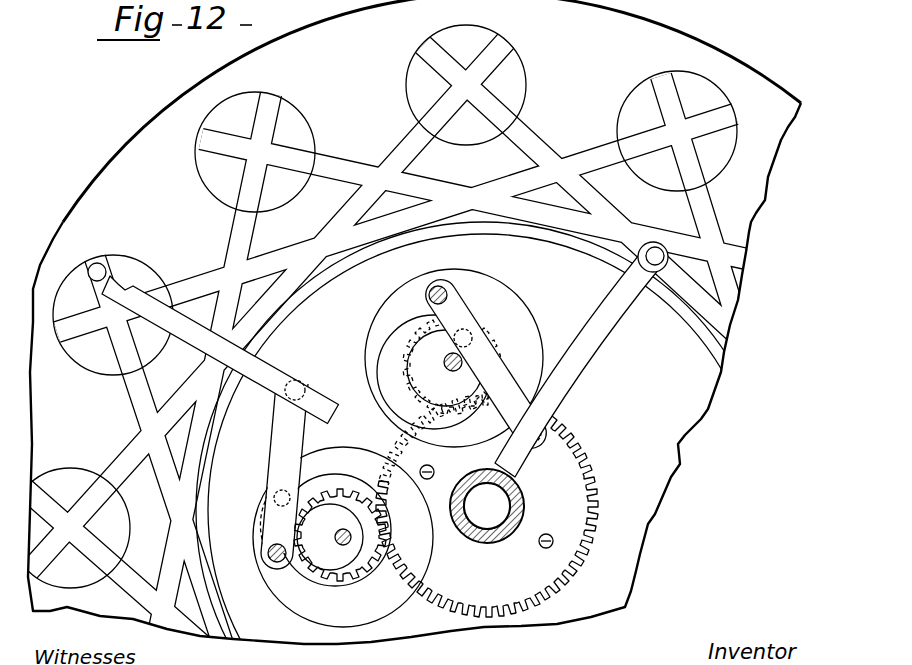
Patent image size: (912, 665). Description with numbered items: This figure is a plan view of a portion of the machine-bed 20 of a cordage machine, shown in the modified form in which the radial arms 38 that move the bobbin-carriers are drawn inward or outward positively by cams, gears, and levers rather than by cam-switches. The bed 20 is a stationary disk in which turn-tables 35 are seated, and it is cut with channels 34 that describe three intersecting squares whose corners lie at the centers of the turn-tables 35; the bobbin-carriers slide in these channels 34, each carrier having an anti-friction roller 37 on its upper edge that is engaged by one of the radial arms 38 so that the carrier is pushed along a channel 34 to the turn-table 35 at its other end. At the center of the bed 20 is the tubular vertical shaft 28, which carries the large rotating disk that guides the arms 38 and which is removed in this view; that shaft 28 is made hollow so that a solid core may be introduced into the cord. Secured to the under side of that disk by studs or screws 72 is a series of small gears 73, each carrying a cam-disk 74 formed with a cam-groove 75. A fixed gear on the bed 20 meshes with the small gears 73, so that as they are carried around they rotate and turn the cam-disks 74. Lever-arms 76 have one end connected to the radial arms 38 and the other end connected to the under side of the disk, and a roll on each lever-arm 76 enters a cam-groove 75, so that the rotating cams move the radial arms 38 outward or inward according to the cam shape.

The bed 20 is at (484, 361).
The hollow vertical shaft 28 is at (514, 503).
The channels 34 is at (468, 353).
The turn-tables 35 is at (373, 306).
The anti-friction roller 37 is at (97, 263).
The radial arms 38 is at (385, 359).
The studs or screws 72 is at (343, 546).
The small gears 73 is at (397, 448).
The cam-disks 74 is at (425, 448).
The cam-grooves 75 is at (375, 450).
The lever-arms 76 is at (452, 300).